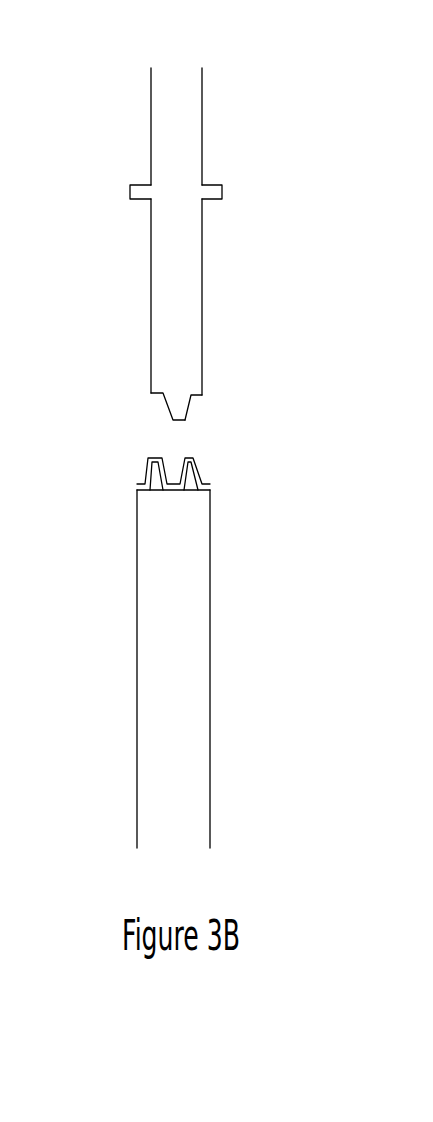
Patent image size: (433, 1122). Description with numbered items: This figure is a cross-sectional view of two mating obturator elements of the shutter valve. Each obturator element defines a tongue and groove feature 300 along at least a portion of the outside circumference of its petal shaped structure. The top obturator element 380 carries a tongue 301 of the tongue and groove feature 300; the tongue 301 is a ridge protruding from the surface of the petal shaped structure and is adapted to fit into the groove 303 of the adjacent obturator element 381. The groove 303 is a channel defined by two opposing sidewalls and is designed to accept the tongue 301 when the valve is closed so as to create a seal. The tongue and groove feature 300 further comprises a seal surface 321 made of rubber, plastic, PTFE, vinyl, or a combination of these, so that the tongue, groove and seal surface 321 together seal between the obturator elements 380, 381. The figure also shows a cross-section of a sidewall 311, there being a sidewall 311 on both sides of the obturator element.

The tongue and groove feature 300 is at (239, 393).
The top obturator element 380 is at (152, 88).
The sidewall 311 is at (131, 192).
The groove 303 is at (172, 451).
The tongue 301 is at (176, 398).
The seal surface 321 is at (142, 482).
The adjacent obturator element 381 is at (140, 815).